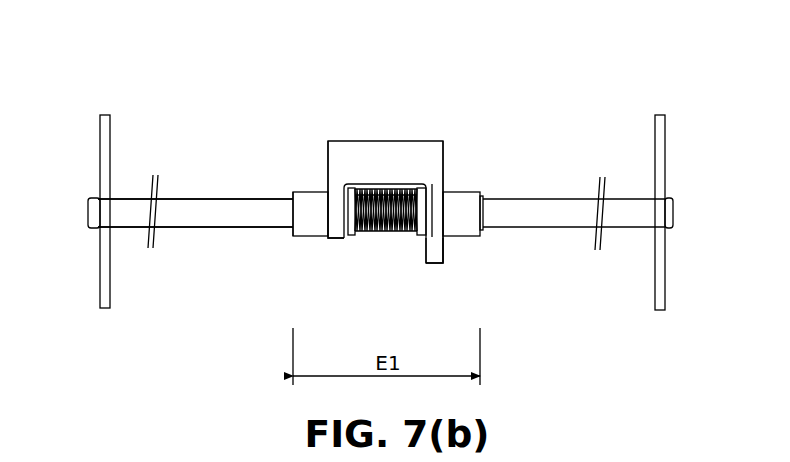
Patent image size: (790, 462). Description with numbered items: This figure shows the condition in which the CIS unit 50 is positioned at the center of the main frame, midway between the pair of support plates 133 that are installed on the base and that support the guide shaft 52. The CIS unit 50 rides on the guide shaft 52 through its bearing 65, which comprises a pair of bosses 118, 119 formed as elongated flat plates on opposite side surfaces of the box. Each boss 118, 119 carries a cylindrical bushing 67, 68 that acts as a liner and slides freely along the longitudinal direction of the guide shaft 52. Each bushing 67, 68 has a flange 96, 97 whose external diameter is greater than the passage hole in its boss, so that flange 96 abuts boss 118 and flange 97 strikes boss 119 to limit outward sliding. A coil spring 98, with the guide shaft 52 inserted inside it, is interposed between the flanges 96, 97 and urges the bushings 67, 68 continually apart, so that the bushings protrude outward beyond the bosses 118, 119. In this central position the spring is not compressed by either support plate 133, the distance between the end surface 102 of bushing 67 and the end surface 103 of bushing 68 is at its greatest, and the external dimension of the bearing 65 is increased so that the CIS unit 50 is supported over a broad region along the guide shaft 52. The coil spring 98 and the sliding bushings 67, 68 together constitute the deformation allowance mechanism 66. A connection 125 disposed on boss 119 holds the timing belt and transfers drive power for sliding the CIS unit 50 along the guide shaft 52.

The CIS unit 50 is at (410, 105).
The guide shaft 52 is at (560, 213).
The bearing 65 is at (291, 181).
The deformation allowance mechanism 66 is at (383, 248).
The bushing 67 is at (311, 226).
The bushing 68 is at (462, 224).
The flange 96 is at (352, 236).
The flange 97 is at (418, 236).
The coil spring 98 is at (387, 188).
The end surface 102 is at (290, 212).
The end surface 103 is at (483, 208).
The boss 118 is at (338, 146).
The boss 119 is at (444, 146).
The connection 125 is at (437, 260).
The support plate 133 is at (112, 138).